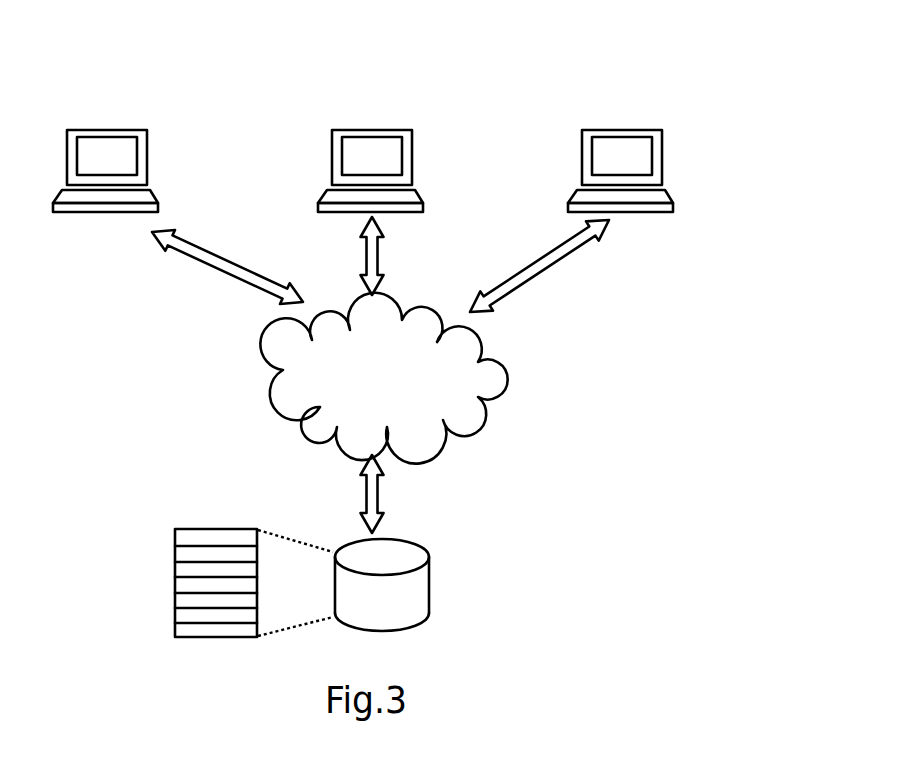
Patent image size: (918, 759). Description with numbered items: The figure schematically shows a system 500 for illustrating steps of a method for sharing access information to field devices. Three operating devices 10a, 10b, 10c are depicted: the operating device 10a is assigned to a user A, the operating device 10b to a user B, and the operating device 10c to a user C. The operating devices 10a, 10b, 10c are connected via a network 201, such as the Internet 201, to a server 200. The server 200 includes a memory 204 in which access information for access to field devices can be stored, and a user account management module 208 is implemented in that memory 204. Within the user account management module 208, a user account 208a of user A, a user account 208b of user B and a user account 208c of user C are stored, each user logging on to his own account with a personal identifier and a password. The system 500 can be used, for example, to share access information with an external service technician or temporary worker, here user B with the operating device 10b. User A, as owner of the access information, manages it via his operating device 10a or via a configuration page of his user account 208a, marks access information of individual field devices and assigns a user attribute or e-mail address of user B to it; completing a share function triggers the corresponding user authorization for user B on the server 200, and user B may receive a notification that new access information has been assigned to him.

The system 500 is at (530, 120).
The operating device 10a is at (172, 169).
The operating device 10b is at (429, 168).
The operating device 10c is at (691, 166).
The network 201 is at (522, 375).
The server 200 is at (444, 555).
The memory 204 is at (179, 516).
The user account management module 208 is at (165, 525).
The user account 208a is at (175, 540).
The user account 208b is at (175, 555).
The user account 208c is at (175, 573).